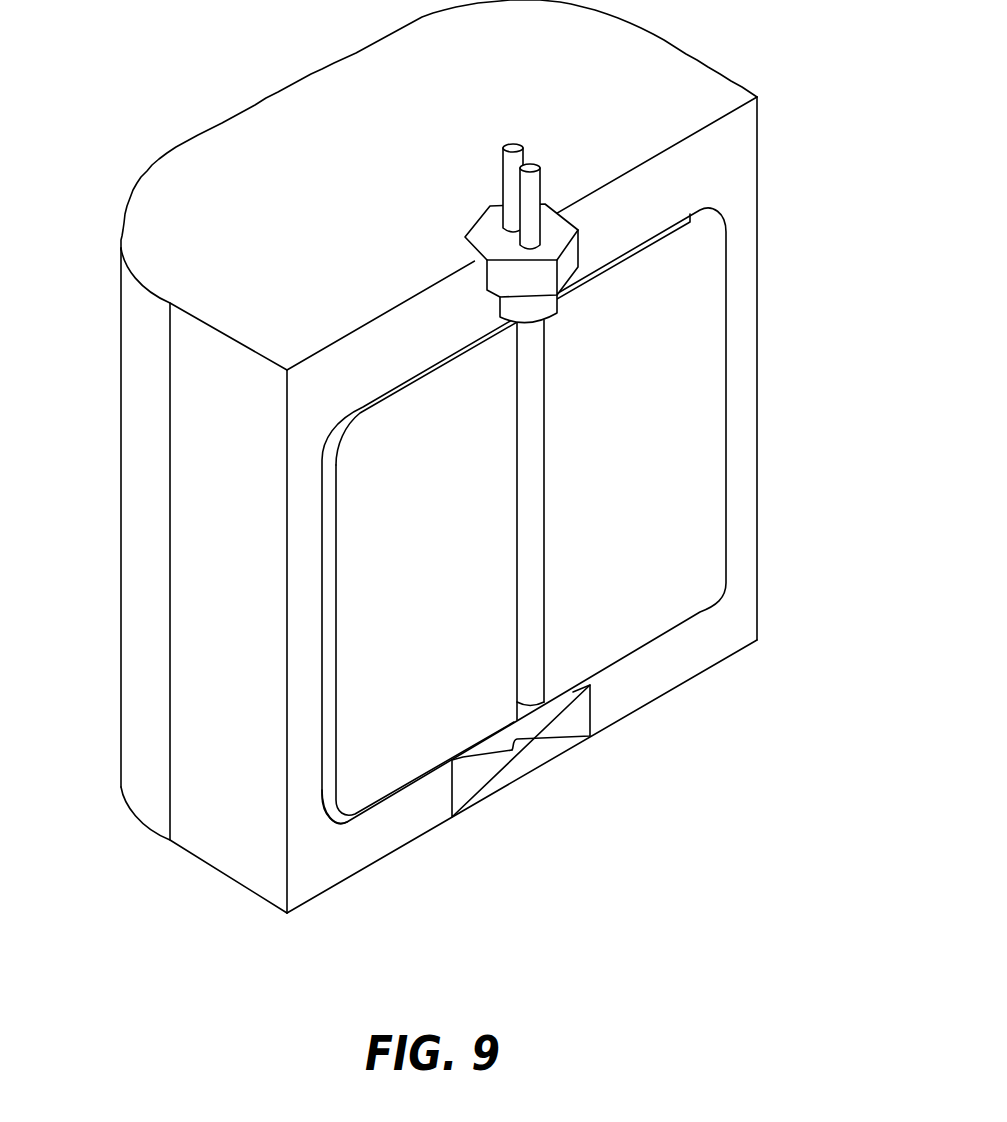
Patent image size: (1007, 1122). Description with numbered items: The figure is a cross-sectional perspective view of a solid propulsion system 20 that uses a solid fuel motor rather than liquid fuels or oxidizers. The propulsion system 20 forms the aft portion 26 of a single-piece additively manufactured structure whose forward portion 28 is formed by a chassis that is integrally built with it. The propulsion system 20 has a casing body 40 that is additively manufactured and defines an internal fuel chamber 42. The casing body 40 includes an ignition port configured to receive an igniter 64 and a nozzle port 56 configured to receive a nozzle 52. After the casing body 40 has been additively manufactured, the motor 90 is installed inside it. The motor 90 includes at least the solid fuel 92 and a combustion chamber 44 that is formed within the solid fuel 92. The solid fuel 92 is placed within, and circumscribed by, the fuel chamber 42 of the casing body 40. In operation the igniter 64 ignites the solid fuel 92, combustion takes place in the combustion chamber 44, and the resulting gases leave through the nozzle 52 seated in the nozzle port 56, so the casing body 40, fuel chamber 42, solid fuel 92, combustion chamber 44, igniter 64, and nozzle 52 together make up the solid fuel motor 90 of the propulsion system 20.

The propulsion system 20 is at (447, 456).
The aft portion 26 is at (774, 629).
The forward portion 28 is at (778, 94).
The casing body 40 is at (121, 296).
The fuel chamber 42 is at (327, 817).
The combustion chamber 44 is at (530, 535).
The nozzle 52 is at (563, 738).
The nozzle port 56 is at (458, 773).
The igniter 64 is at (483, 233).
The motor 90 is at (710, 513).
The solid fuel 92 is at (665, 340).